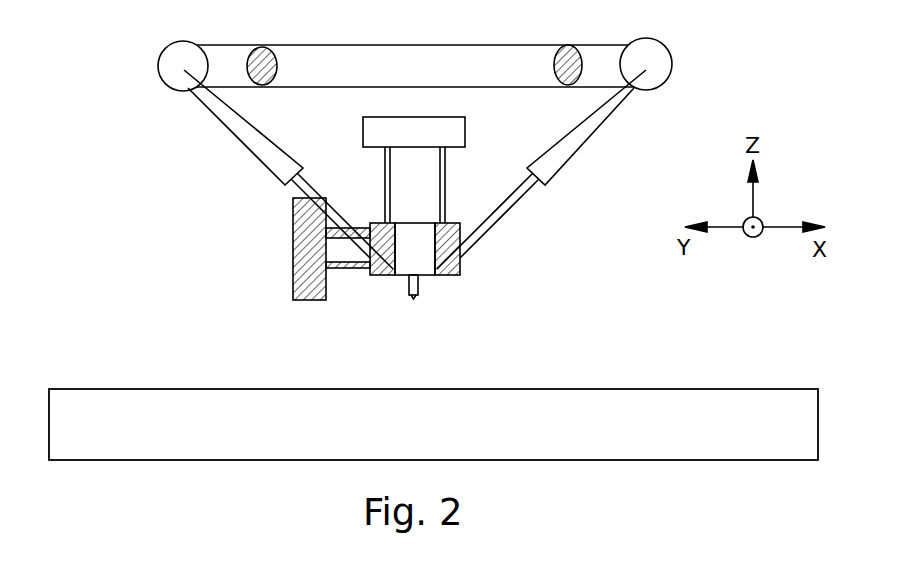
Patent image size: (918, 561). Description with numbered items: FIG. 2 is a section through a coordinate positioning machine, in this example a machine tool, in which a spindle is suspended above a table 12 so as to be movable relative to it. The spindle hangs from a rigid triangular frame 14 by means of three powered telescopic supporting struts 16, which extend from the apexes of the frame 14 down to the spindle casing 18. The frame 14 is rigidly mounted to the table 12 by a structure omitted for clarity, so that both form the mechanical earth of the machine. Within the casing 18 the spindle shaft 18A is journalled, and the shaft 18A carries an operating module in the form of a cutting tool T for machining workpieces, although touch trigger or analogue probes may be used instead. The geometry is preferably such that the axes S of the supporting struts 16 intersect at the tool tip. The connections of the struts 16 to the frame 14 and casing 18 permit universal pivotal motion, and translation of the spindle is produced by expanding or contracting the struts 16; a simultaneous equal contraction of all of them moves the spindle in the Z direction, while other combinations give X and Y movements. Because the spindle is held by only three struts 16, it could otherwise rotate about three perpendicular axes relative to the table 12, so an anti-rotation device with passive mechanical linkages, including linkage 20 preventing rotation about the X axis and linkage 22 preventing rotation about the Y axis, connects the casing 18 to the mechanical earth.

The table 12 is at (632, 408).
The rigid triangular frame 14 is at (632, 55).
The powered telescopic supporting strut 16 is at (583, 135).
The spindle casing 18 is at (450, 245).
The spindle shaft 18A is at (412, 260).
The mechanical linkage 20 is at (465, 121).
The mechanical linkage 22 is at (287, 249).
The strut axis S is at (243, 128).
The cutting tool T is at (420, 288).